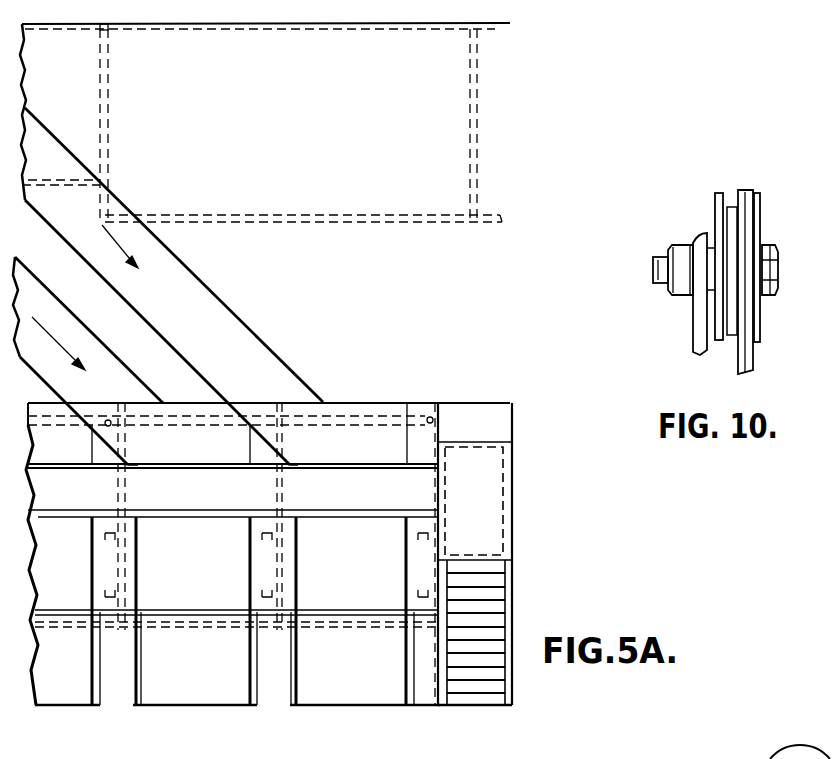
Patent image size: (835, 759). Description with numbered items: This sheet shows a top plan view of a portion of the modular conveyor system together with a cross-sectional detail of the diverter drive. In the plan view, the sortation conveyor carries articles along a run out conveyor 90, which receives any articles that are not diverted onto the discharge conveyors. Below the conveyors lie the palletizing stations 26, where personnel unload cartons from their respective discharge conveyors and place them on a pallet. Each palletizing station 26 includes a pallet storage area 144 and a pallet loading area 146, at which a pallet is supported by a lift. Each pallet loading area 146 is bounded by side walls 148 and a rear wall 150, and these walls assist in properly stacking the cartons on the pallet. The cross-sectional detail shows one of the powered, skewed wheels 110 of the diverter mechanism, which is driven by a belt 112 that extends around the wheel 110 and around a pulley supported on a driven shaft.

In FIG. 5A, the run out conveyor 90 is at (250, 327).
In FIG. 5A, the pallet loading area 146 is at (352, 531).
In FIG. 5A, the side walls 148 is at (405, 575).
In FIG. 5A, the rear wall 150 is at (338, 610).
In FIG. 5A, the palletizing station 26 is at (218, 673).
In FIG. 5A, the pallet storage area 144 is at (382, 683).
In FIG. 10, the powered skewed wheels 110 is at (716, 200).
In FIG. 10, the belt 112 is at (730, 362).